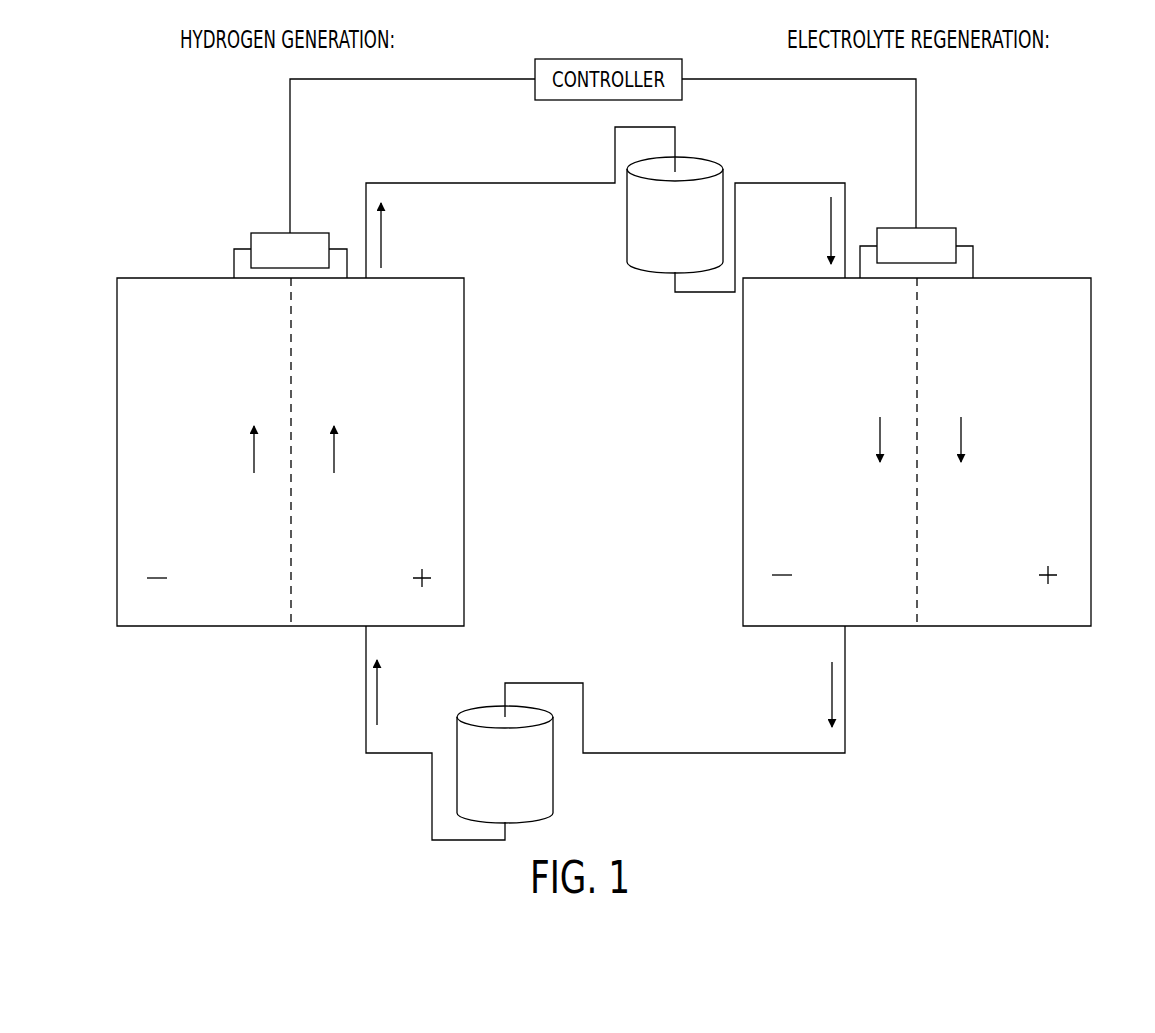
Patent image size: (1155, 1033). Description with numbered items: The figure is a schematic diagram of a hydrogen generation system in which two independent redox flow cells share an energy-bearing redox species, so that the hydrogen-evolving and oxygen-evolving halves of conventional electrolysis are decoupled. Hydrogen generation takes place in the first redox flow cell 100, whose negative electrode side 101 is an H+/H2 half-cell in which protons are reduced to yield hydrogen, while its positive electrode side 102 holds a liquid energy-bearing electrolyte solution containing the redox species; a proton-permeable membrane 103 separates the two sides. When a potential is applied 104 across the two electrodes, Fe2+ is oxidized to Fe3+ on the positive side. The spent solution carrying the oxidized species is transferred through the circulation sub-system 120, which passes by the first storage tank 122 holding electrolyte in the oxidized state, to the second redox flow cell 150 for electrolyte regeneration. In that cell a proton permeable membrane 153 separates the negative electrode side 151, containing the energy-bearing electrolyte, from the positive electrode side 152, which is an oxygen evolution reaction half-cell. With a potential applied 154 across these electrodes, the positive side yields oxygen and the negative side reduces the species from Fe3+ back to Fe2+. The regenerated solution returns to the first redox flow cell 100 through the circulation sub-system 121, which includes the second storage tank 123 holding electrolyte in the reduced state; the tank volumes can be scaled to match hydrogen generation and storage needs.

The first redox flow cell 100 is at (146, 160).
The negative electrode side 101 is at (135, 493).
The positive electrode side 102 is at (447, 525).
The proton-permeable membrane 103 is at (291, 332).
The applied potential 104 is at (283, 232).
The circulation sub-system 120 is at (545, 185).
The circulation sub-system 121 is at (645, 755).
The first storage tank 122 is at (700, 157).
The second storage tank 123 is at (485, 705).
The second redox flow cell 150 is at (1056, 160).
The negative electrode side 151 is at (757, 493).
The positive electrode side 152 is at (1070, 525).
The proton permeable membrane 153 is at (917, 350).
The applied potential 154 is at (934, 227).